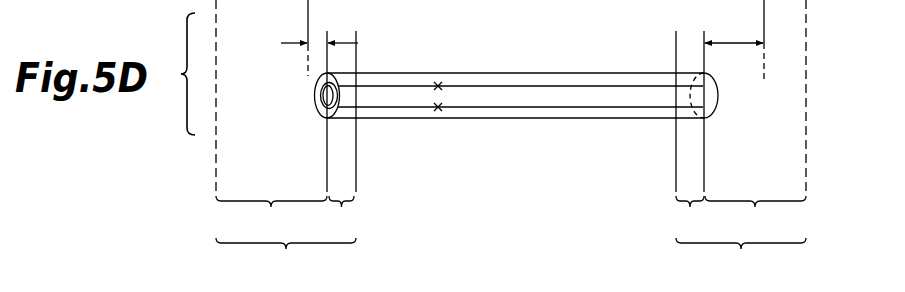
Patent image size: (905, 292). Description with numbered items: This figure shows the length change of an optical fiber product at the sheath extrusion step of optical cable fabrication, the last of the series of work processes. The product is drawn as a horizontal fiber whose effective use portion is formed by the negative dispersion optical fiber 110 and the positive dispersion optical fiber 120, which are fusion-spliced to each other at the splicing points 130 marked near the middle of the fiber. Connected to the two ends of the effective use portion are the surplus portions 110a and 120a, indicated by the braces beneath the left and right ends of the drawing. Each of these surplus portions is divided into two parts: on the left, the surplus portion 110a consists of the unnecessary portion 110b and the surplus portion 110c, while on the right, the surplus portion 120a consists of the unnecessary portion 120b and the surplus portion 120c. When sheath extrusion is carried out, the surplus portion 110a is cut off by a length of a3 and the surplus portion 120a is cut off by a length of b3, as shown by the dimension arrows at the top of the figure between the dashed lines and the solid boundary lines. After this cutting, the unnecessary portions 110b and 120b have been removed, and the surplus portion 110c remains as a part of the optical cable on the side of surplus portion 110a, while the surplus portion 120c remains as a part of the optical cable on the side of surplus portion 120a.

The negative dispersion optical fiber 110 is at (391, 112).
The positive dispersion optical fiber 120 is at (590, 112).
The splicing points 130 is at (445, 106).
The surplus portion 110a is at (286, 259).
The unnecessary portion 110b is at (271, 118).
The surplus portion 110c is at (343, 134).
The surplus portion 120a is at (741, 259).
The unnecessary portion 120b is at (755, 118).
The surplus portion 120c is at (689, 134).
The cut-off length a3 is at (319, 38).
The cut-off length b3 is at (734, 40).